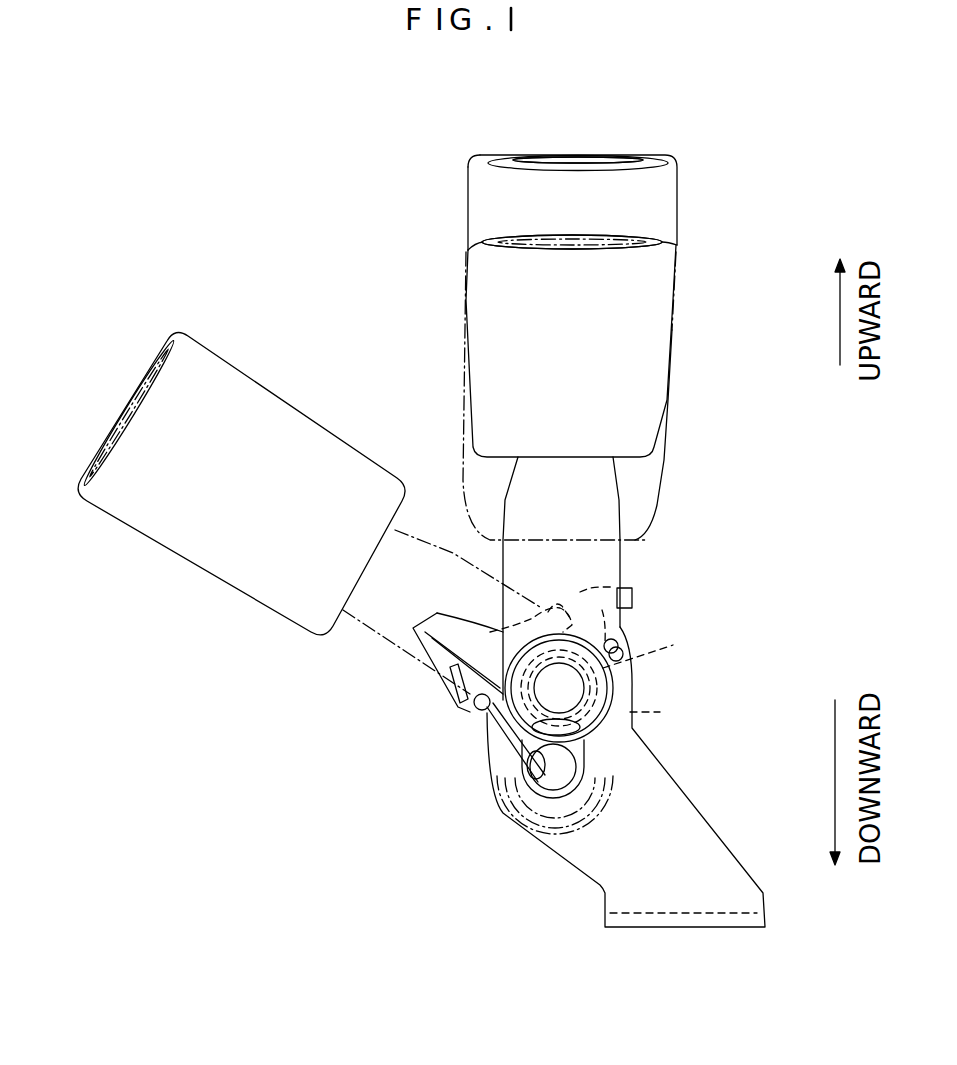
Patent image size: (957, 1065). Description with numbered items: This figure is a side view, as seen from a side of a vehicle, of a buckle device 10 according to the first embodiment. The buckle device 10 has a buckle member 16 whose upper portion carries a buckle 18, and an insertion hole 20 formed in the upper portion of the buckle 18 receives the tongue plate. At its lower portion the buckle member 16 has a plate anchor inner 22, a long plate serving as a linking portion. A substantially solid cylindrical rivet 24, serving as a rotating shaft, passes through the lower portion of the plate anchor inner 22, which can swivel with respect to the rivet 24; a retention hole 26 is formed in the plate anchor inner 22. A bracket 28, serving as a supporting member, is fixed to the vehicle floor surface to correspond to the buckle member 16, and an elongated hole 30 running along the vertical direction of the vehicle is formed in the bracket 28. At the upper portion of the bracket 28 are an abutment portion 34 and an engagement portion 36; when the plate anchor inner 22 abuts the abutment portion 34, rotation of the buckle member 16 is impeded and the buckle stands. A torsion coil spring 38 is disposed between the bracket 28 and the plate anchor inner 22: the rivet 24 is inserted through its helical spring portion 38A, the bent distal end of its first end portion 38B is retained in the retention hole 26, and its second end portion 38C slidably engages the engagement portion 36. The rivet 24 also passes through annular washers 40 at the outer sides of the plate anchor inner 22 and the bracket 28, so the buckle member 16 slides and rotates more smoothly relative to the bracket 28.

The buckle device 10 is at (353, 237).
The buckle member 16 is at (298, 400).
The buckle 18 is at (677, 233).
The insertion hole 20 is at (585, 162).
The plate anchor inner 22 is at (620, 508).
The rivet 24 is at (570, 690).
The retention hole 26 is at (618, 645).
The bracket 28 is at (720, 840).
The elongated hole 30 is at (543, 782).
The abutment portion 34 is at (632, 590).
The engagement portion 36 is at (400, 655).
The torsion coil spring 38 is at (547, 632).
The spring portion 38A is at (660, 712).
The first end portion 38B is at (673, 645).
The second end portion 38C is at (452, 668).
The annular washers 40 is at (484, 736).